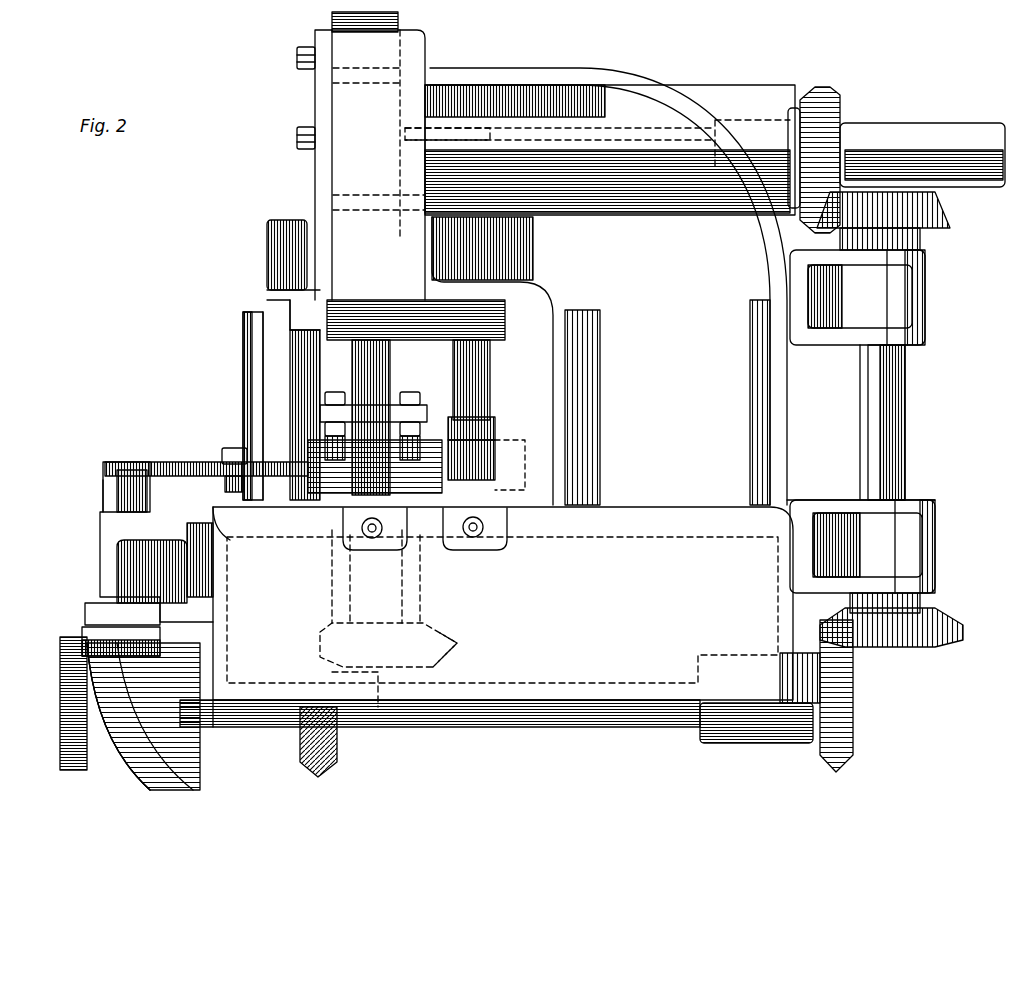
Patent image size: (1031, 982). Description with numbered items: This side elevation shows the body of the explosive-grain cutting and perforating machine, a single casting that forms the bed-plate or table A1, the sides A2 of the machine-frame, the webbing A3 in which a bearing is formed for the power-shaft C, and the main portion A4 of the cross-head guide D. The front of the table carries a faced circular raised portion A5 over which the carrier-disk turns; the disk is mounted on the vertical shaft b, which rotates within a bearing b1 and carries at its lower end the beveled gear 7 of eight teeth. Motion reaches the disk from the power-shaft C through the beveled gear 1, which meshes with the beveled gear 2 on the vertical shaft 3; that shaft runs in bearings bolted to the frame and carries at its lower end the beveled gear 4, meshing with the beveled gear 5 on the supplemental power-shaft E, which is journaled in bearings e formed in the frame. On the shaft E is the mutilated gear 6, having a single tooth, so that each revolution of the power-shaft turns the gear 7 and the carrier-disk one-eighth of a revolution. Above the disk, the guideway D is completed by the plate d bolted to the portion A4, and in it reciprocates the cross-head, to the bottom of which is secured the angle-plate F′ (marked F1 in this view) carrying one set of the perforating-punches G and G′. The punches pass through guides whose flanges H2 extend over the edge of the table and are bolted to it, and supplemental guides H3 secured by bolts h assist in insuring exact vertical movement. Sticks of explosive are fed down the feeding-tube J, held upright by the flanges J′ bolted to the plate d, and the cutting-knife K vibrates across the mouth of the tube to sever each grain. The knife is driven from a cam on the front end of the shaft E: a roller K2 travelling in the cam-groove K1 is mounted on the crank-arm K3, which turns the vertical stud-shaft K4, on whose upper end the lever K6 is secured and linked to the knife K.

The angle-plate F′ is at (332, 22).
The cross-head guide D is at (426, 37).
The plate d is at (297, 148).
The upwardly-extending flanges J′ is at (287, 220).
The feeding-tube J is at (243, 338).
The angle-plate F1 is at (416, 331).
The perforating-punches G is at (352, 380).
The perforating-punches G′ is at (484, 380).
The bolts h is at (327, 405).
The supplemental guides H3 is at (496, 420).
The flanges H2 is at (373, 552).
The webbing A3 is at (548, 70).
The main portion of the cross-head guide A4 is at (428, 70).
The beveled gear 1 is at (828, 98).
The power-shaft C is at (910, 125).
The beveled gear 2 is at (950, 205).
The vertical shaft 3 is at (906, 366).
The beveled gear 4 is at (965, 627).
The beveled gear 5 is at (855, 697).
The bearings e is at (770, 742).
The supplemental power-shaft E is at (588, 728).
The sides of the machine-frame A2 is at (503, 603).
The bed-plate or table A1 is at (213, 518).
The circular raised portion A5 is at (248, 525).
The lever K6 is at (180, 465).
The vertical stud-shaft K4 is at (107, 505).
The cutting-knife K is at (252, 465).
The cam-groove K1 is at (87, 683).
The roller K2 is at (82, 634).
The crank-arm K3 is at (92, 618).
The vertical shaft b is at (397, 612).
The bearing b1 is at (332, 600).
The beveled gear 7 is at (440, 650).
The mutilated gear 6 is at (330, 762).